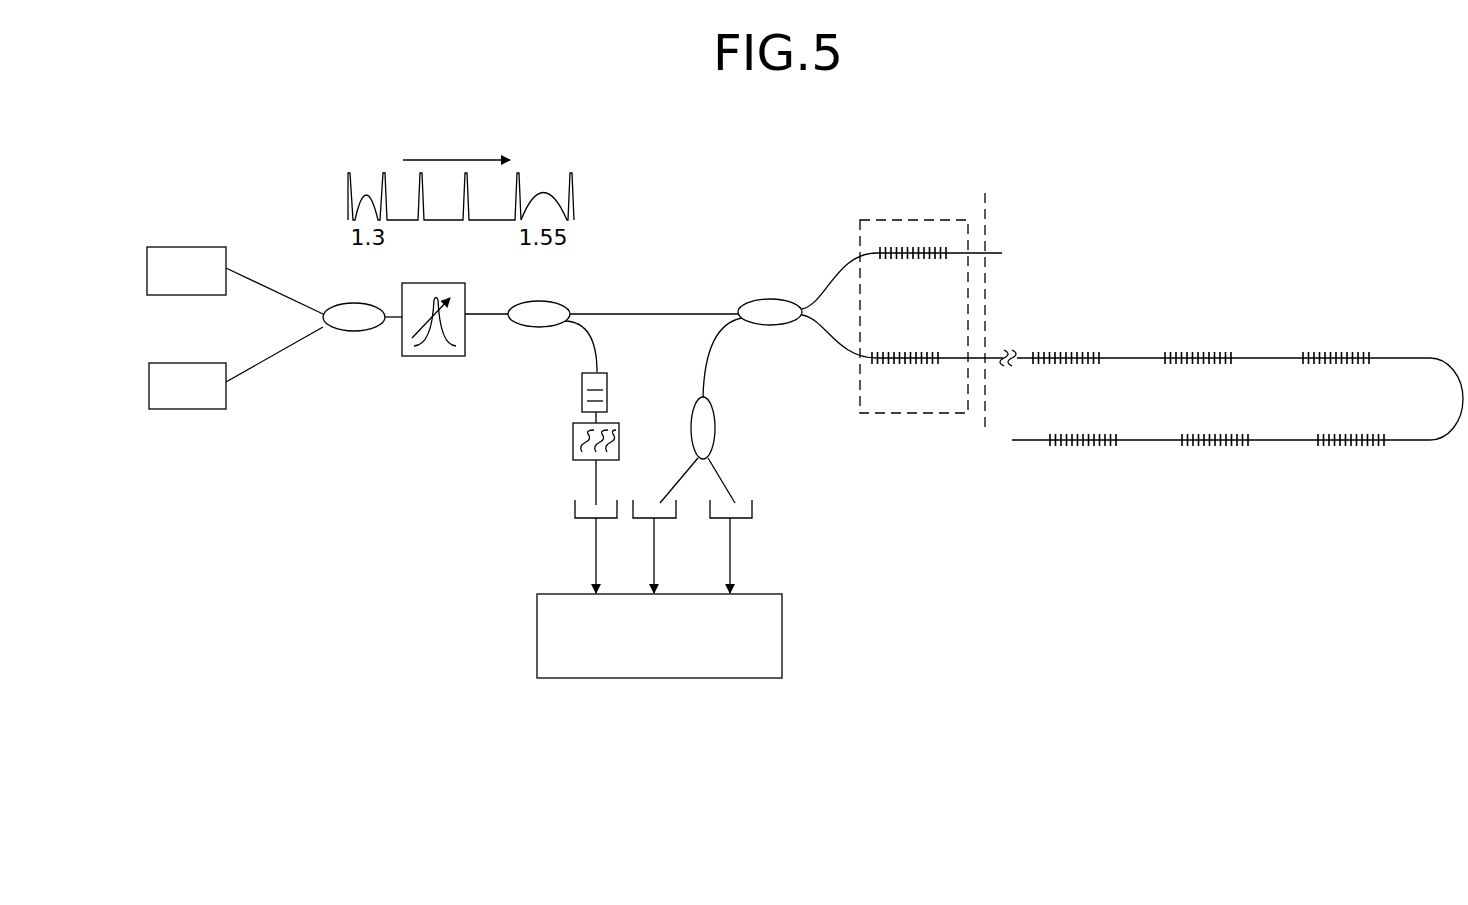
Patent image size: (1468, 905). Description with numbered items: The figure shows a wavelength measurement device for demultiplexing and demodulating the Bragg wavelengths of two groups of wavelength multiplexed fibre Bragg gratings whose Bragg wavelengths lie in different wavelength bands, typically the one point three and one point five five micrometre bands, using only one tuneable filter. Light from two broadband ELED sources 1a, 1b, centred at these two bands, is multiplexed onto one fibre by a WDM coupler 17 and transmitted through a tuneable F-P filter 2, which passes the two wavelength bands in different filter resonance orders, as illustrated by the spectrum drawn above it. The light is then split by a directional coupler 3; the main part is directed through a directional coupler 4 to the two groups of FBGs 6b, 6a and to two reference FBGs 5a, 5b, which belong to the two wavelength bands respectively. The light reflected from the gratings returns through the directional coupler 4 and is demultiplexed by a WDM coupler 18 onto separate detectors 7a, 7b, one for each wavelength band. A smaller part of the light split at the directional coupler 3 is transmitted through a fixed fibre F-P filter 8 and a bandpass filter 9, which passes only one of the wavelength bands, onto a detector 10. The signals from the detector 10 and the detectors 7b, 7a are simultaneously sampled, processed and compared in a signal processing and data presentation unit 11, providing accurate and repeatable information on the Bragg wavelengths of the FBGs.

The broadband ELED source 1a is at (235, 263).
The broadband ELED source 1b is at (236, 368).
The tuneable F-P filter 2 is at (455, 307).
The directional coupler 3 is at (623, 325).
The directional coupler 4 is at (853, 325).
The reference FBG 5a is at (915, 269).
The reference FBG 5b is at (909, 367).
The group of FBGs 6a is at (1234, 396).
The group of FBGs 6b is at (1217, 396).
The detector 7a is at (749, 546).
The detector 7b is at (667, 546).
The fixed fibre F-P filter 8 is at (579, 398).
The bandpass filter 9 is at (584, 464).
The detector 10 is at (577, 545).
The signal processing and data presentation unit 11 is at (659, 636).
The WDM coupler 17 is at (362, 301).
The WDM coupler 18 is at (708, 450).